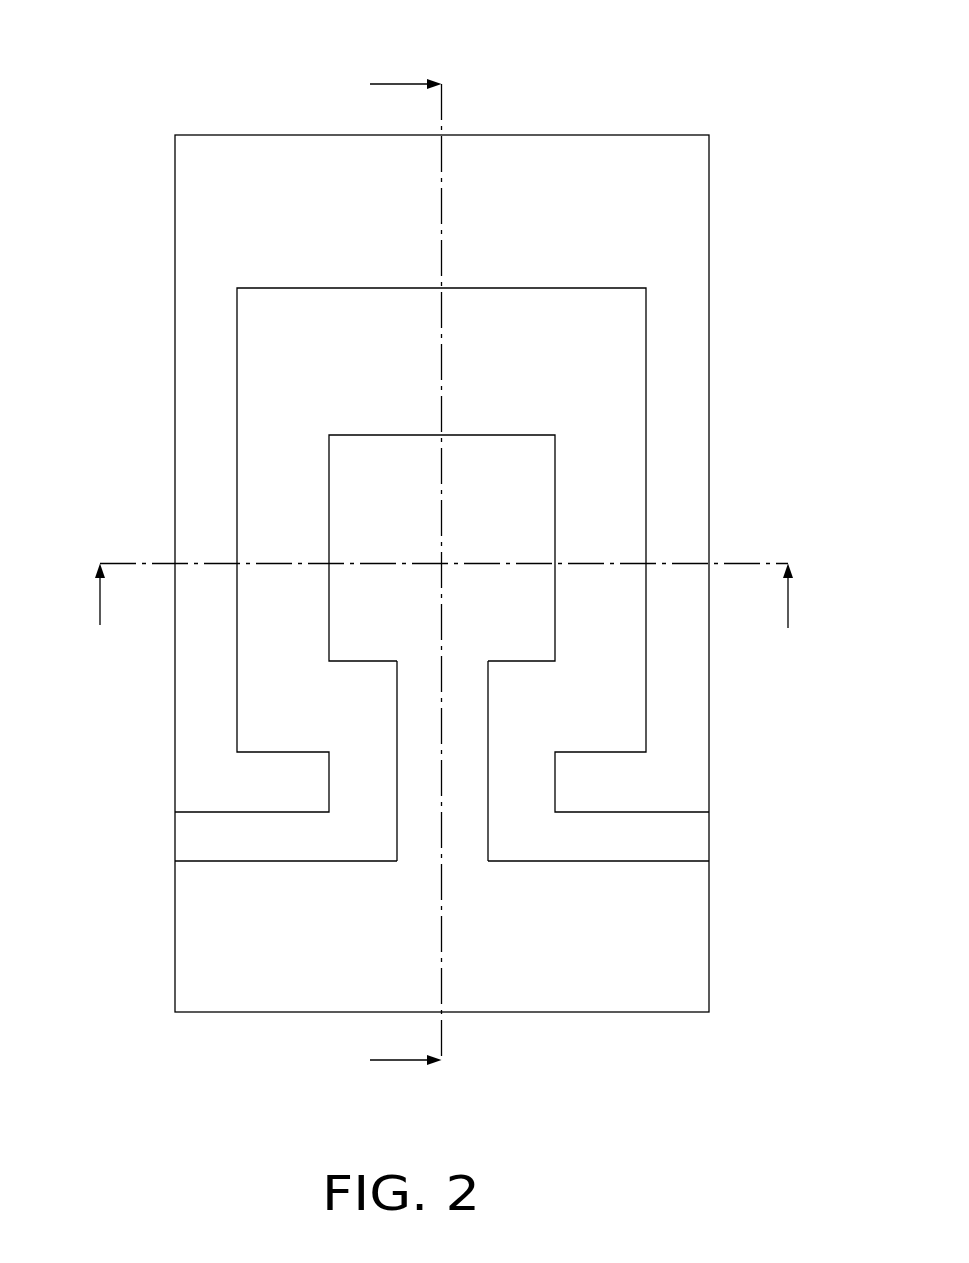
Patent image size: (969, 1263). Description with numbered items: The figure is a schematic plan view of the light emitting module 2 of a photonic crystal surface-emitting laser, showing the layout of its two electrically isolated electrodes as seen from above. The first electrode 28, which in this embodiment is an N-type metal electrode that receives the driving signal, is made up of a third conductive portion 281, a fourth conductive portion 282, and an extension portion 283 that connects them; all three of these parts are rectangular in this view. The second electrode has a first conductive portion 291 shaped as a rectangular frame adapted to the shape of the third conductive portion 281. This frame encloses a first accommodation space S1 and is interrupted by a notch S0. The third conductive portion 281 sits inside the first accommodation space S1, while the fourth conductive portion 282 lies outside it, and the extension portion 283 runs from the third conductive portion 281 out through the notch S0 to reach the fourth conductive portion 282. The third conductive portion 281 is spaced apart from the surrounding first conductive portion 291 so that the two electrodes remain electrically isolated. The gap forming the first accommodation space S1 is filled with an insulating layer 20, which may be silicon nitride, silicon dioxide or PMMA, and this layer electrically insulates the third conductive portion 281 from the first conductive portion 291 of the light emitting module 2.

The light emitting module 2 is at (403, 33).
The insulating layer 20 is at (287, 458).
The first conductive portion 291 is at (203, 681).
The first electrode 28 is at (524, 675).
The third conductive portion 281 is at (530, 624).
The fourth conductive portion 282 is at (491, 878).
The extension portion 283 is at (464, 785).
The first accommodation space S1 is at (265, 521).
The notch S0 is at (340, 779).